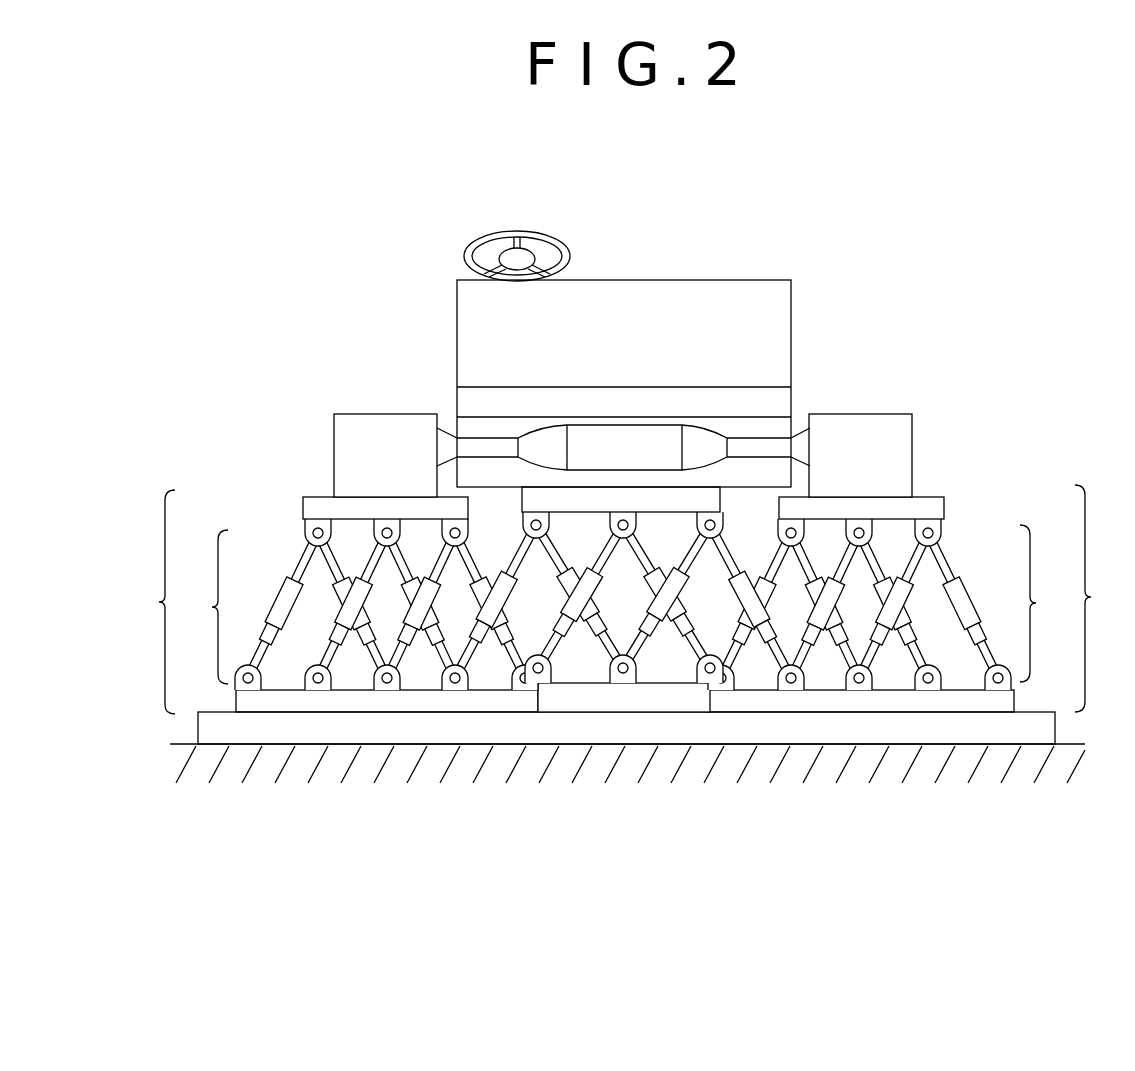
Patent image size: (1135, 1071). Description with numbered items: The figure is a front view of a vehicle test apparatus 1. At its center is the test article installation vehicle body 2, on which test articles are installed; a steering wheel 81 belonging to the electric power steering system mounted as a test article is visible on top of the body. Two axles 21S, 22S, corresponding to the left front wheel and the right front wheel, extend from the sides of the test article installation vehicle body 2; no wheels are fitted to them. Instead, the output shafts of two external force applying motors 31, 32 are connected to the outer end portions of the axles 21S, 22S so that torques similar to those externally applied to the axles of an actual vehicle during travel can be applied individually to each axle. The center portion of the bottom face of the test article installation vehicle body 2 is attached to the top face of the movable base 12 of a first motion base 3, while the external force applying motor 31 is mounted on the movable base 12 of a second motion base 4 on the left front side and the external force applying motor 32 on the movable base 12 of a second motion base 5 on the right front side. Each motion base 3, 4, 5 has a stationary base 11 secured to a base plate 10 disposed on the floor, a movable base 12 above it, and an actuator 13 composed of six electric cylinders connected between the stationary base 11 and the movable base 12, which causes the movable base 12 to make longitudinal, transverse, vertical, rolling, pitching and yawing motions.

The vehicle test apparatus 1 is at (742, 263).
The test article installation vehicle body 2 is at (792, 305).
The first motion base 3 is at (738, 555).
The second motion base 4 is at (1067, 598).
The second motion base 5 is at (184, 602).
The base plate 10 is at (1047, 729).
The stationary base 11 is at (245, 705).
The movable base 12 is at (310, 508).
The actuator 13 is at (550, 552).
The axle 21S is at (762, 444).
The axle 22S is at (486, 446).
The external force applying motor 31 is at (903, 454).
The external force applying motor 32 is at (344, 455).
The steering wheel 81 is at (477, 243).